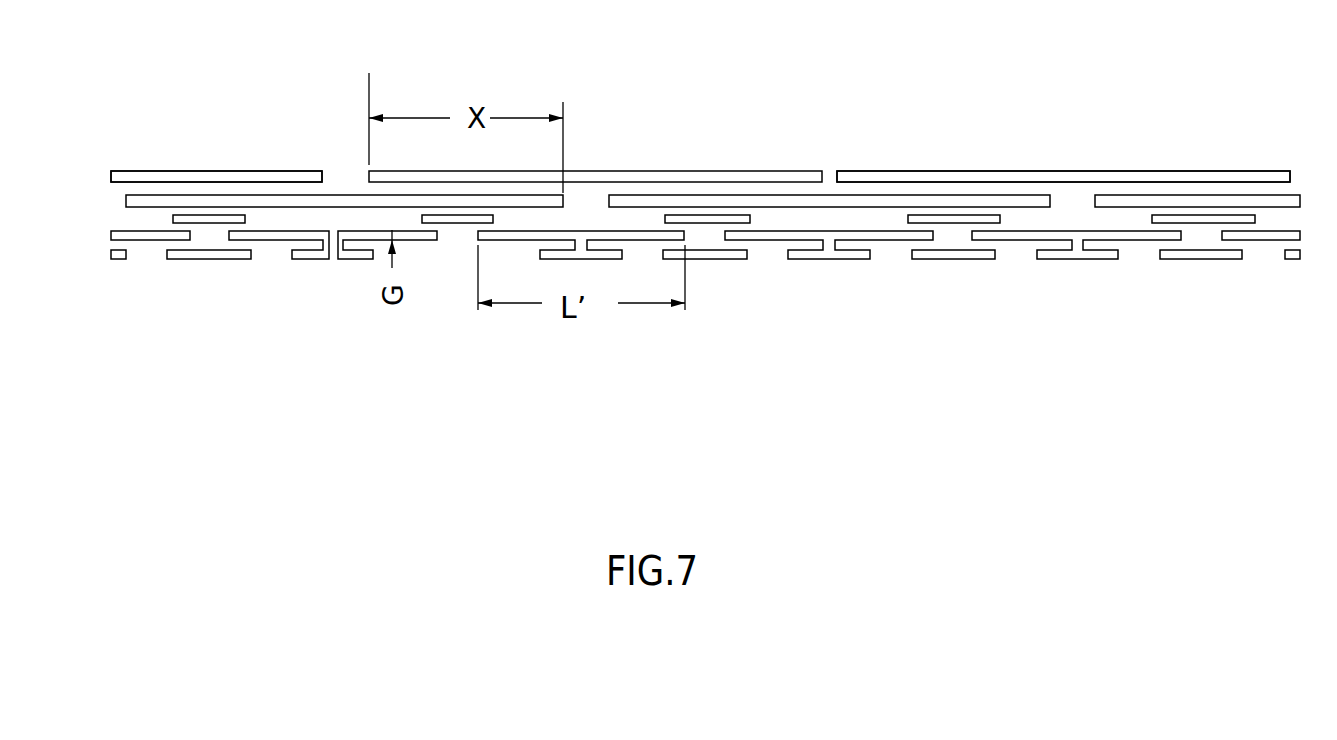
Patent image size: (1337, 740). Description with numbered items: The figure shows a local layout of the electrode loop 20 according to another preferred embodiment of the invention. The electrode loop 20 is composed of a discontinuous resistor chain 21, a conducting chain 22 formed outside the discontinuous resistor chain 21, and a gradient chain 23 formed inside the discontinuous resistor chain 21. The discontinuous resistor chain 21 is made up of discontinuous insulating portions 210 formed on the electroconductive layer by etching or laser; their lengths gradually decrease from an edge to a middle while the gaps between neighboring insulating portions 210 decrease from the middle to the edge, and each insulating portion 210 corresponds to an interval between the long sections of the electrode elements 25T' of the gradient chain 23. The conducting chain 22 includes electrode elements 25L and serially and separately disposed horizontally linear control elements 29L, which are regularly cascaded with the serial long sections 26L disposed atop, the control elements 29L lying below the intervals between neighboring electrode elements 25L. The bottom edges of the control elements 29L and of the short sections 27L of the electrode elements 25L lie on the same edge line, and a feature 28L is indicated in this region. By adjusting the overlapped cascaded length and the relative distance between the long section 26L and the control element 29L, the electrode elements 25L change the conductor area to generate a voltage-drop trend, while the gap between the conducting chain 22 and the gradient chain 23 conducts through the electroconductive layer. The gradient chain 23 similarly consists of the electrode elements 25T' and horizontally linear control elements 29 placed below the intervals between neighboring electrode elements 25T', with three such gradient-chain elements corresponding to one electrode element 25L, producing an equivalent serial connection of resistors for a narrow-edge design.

The electrode loop 20 is at (106, 166).
The discontinuous resistor chain 21 is at (163, 220).
The conducting chain 22 is at (192, 165).
The gradient chain 23 is at (106, 262).
The horizontally linear control element 29L is at (346, 192).
The insulating portion 210 is at (709, 216).
The long section 26L is at (769, 171).
The electrode element 25L is at (833, 169).
The coupling gap segment 28L is at (838, 190).
The short section 27L is at (1028, 195).
The horizontally linear control element 29 is at (706, 262).
The electrode element 25T' is at (829, 321).